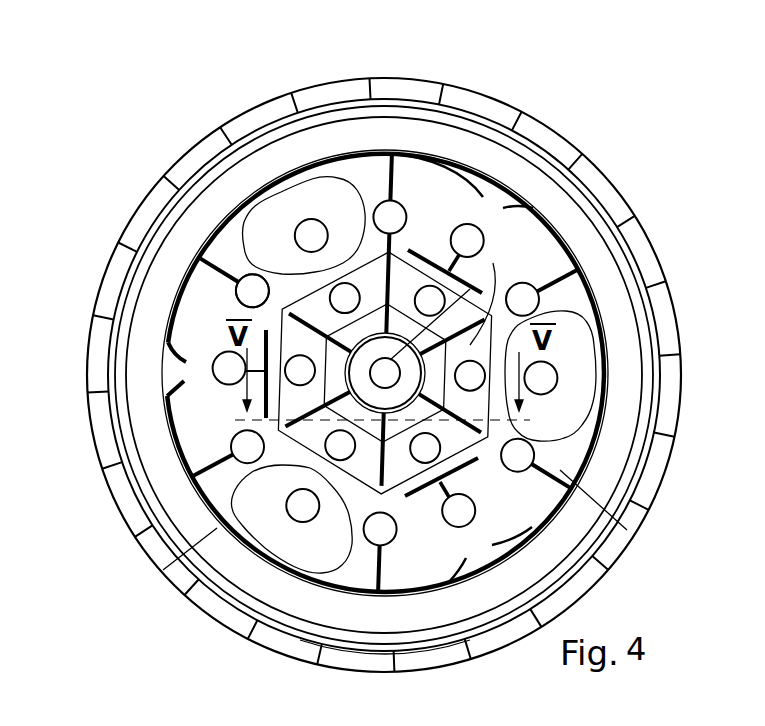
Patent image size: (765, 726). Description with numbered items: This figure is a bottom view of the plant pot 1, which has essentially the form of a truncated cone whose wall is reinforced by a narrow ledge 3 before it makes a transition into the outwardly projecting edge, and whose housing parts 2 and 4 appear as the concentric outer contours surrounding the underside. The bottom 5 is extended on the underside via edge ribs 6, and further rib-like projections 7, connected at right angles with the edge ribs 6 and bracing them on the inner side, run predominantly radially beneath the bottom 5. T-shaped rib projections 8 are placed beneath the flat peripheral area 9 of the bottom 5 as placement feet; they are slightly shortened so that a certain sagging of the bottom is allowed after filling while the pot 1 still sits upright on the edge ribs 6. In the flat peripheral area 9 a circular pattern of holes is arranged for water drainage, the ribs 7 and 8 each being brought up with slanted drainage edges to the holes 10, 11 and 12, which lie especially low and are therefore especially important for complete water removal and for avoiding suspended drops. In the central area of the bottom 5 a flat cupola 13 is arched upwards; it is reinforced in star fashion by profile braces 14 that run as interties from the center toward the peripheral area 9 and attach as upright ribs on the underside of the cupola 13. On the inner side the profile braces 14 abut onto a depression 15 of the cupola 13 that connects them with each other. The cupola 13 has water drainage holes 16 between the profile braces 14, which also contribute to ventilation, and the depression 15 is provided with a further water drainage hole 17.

The plant pot 1 is at (575, 79).
The housing ring 2 is at (534, 181).
The narrow ledge 3 is at (412, 116).
The outer segmented ring 4 is at (337, 97).
The bottom 5 is at (198, 439).
The edge ribs 6 is at (163, 570).
The rib-like projections 7 is at (627, 530).
The rib projections 8 is at (472, 229).
The flat peripheral area 9 is at (432, 568).
The holes 10 is at (388, 520).
The holes 11 is at (476, 512).
The holes 12 is at (544, 396).
The flat cupola 13 is at (236, 288).
The profile braces 14 is at (300, 297).
The depression 15 is at (388, 364).
The water drainage holes 16 is at (340, 452).
The water drainage hole 17 is at (470, 289).